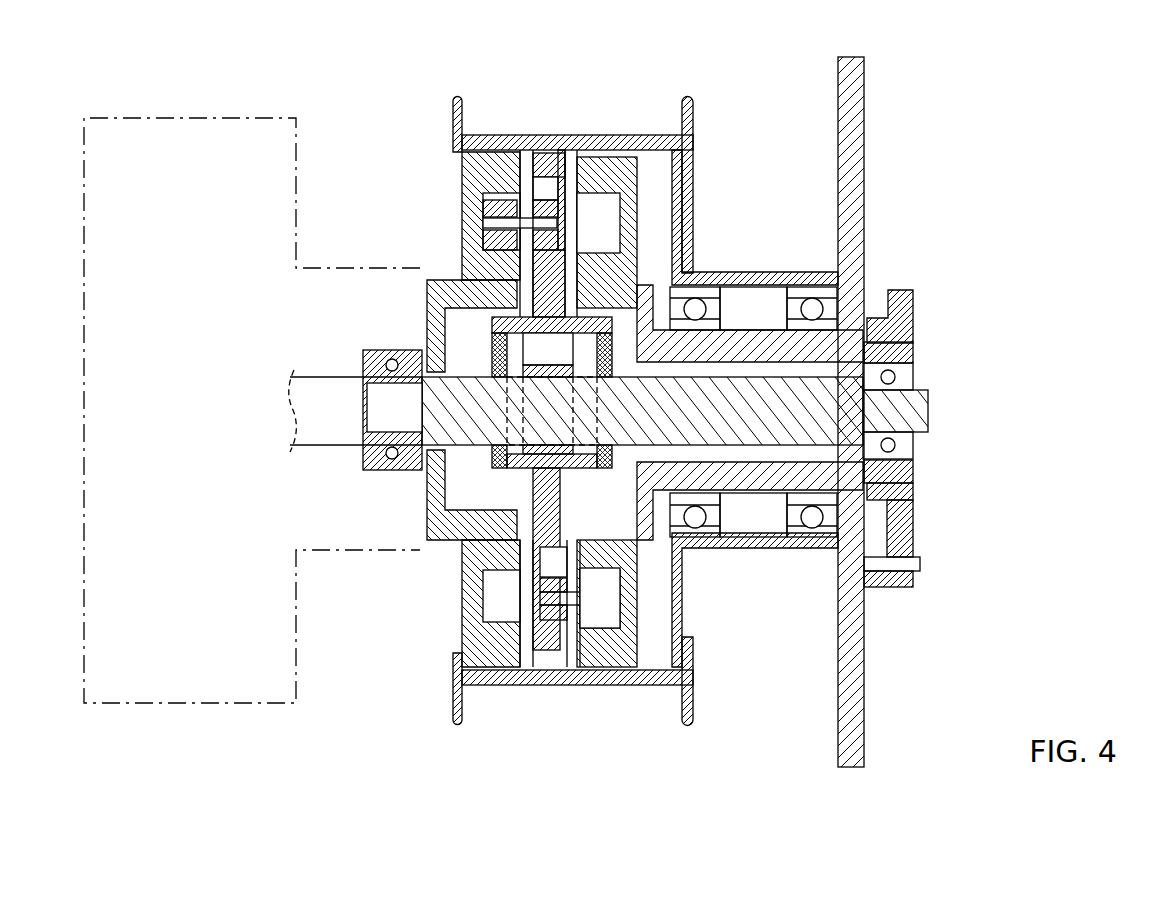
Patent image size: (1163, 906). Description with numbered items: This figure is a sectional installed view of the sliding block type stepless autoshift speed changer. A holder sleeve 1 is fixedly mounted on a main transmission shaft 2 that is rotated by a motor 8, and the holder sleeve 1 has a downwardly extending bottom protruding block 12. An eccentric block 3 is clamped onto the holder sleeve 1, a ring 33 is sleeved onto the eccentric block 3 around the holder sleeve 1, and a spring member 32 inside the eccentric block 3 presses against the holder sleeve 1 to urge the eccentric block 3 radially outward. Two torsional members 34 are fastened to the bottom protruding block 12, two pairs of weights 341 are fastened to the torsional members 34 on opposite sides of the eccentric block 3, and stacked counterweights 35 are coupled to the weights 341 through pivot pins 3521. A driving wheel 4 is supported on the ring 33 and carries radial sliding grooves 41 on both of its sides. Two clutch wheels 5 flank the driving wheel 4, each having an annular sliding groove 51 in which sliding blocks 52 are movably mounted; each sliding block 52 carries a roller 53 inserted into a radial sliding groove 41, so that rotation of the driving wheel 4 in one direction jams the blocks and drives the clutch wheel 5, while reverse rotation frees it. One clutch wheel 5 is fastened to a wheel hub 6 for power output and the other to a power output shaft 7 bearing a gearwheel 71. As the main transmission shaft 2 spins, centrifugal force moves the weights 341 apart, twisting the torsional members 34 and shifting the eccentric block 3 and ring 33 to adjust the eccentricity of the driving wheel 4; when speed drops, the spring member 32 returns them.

The holder sleeve 1 is at (723, 548).
The main transmission shaft 2 is at (751, 393).
The eccentric block 3 is at (559, 200).
The driving wheel 4 is at (543, 182).
The clutch wheel 5 is at (458, 120).
The wheel hub 6 is at (625, 135).
The power output shaft 7 is at (831, 270).
The motor 8 is at (228, 130).
The bottom protruding block 12 is at (598, 663).
The spring member 32 is at (513, 293).
The ring 33 is at (630, 173).
The torsional member 34 is at (600, 447).
The stacked counterweight 35 is at (495, 453).
The radial sliding groove 41 is at (531, 187).
The annular sliding groove 51 is at (512, 335).
The sliding block 52 is at (487, 197).
The roller 53 is at (530, 215).
The gearwheel 71 is at (913, 307).
The weight 341 is at (493, 177).
The pivot pin 3521 is at (485, 243).